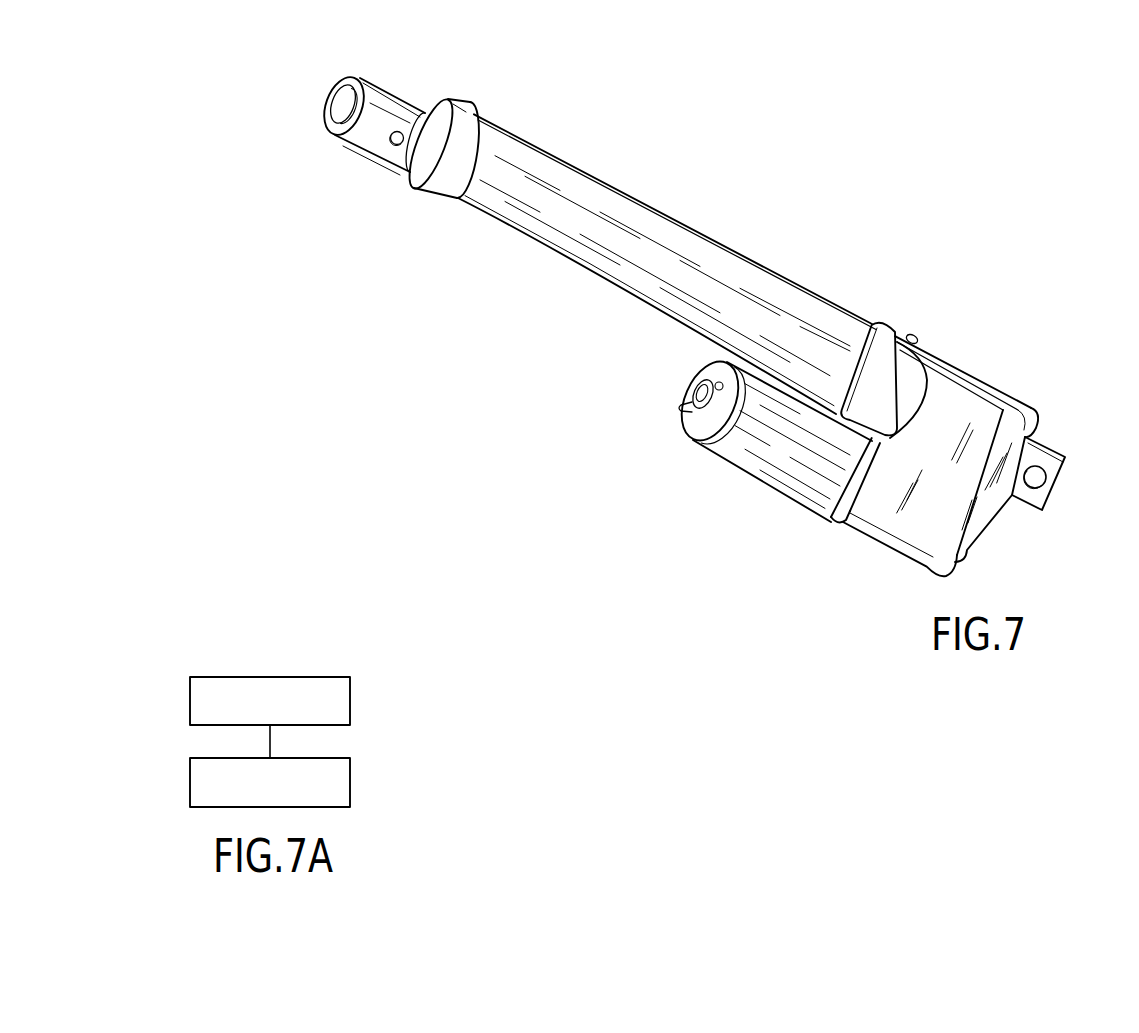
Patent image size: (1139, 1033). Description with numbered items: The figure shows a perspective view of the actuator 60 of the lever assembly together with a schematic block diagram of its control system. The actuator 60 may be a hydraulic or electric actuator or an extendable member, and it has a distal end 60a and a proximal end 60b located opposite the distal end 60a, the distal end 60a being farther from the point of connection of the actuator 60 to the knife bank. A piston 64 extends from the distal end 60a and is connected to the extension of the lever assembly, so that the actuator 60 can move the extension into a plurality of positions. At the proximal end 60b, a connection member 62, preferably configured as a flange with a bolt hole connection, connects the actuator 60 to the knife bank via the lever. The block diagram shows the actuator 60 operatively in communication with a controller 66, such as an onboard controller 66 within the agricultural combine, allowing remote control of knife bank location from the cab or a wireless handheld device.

In FIG. 7, the actuator 60 is at (750, 172).
In FIG. 7A, the actuator 60 is at (352, 703).
In FIG. 7, the distal end 60a is at (396, 70).
In FIG. 7, the proximal end 60b is at (1065, 398).
In FIG. 7, the connection member 62 is at (1063, 465).
In FIG. 7, the piston 64 is at (363, 160).
In FIG. 7A, the controller 66 is at (352, 787).